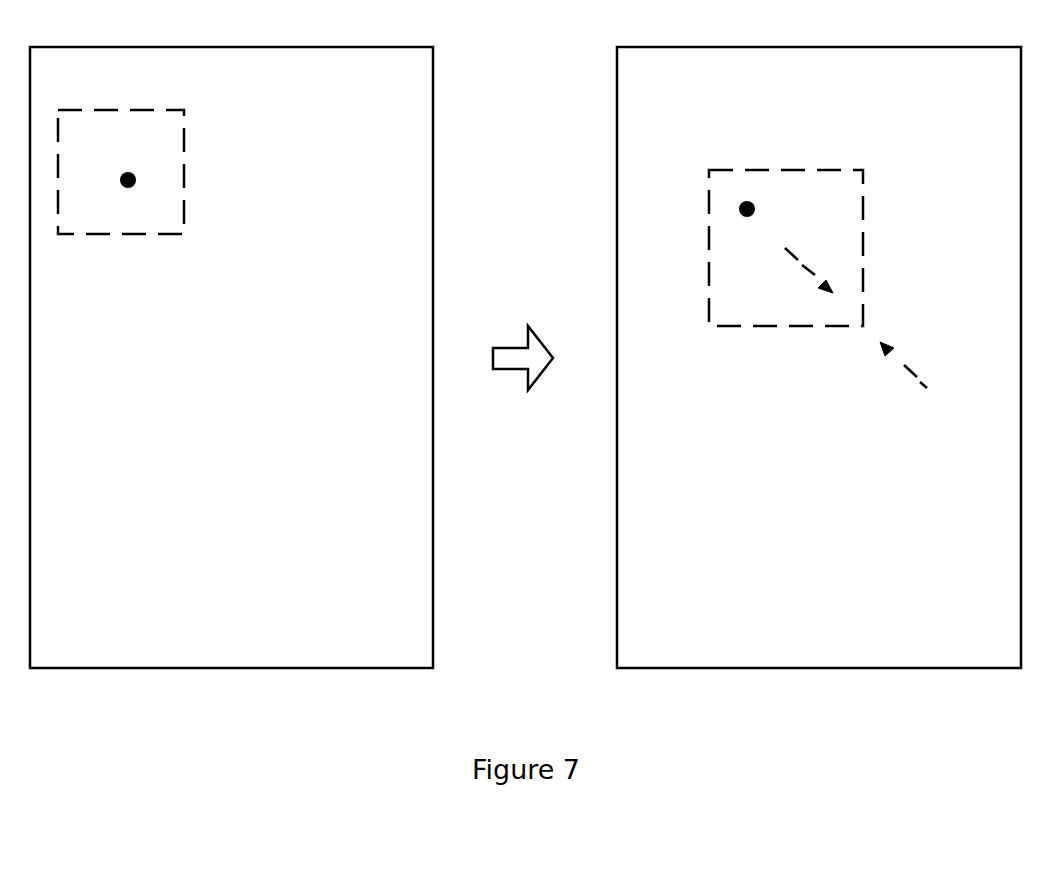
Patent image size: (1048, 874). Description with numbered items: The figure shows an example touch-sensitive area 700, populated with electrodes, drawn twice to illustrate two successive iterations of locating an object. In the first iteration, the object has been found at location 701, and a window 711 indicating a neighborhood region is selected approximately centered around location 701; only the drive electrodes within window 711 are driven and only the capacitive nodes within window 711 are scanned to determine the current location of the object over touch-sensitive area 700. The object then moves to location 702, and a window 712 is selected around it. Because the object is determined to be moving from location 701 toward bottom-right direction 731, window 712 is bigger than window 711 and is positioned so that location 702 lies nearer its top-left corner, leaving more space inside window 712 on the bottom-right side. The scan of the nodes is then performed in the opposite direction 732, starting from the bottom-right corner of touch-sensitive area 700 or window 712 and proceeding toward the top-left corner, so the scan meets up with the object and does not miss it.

The touch-sensitive area 700 is at (231, 379).
The location 701 is at (181, 161).
The location 702 is at (778, 171).
The window 711 is at (125, 193).
The window 712 is at (786, 269).
The bottom-right direction 731 is at (786, 280).
The opposite direction 732 is at (880, 373).